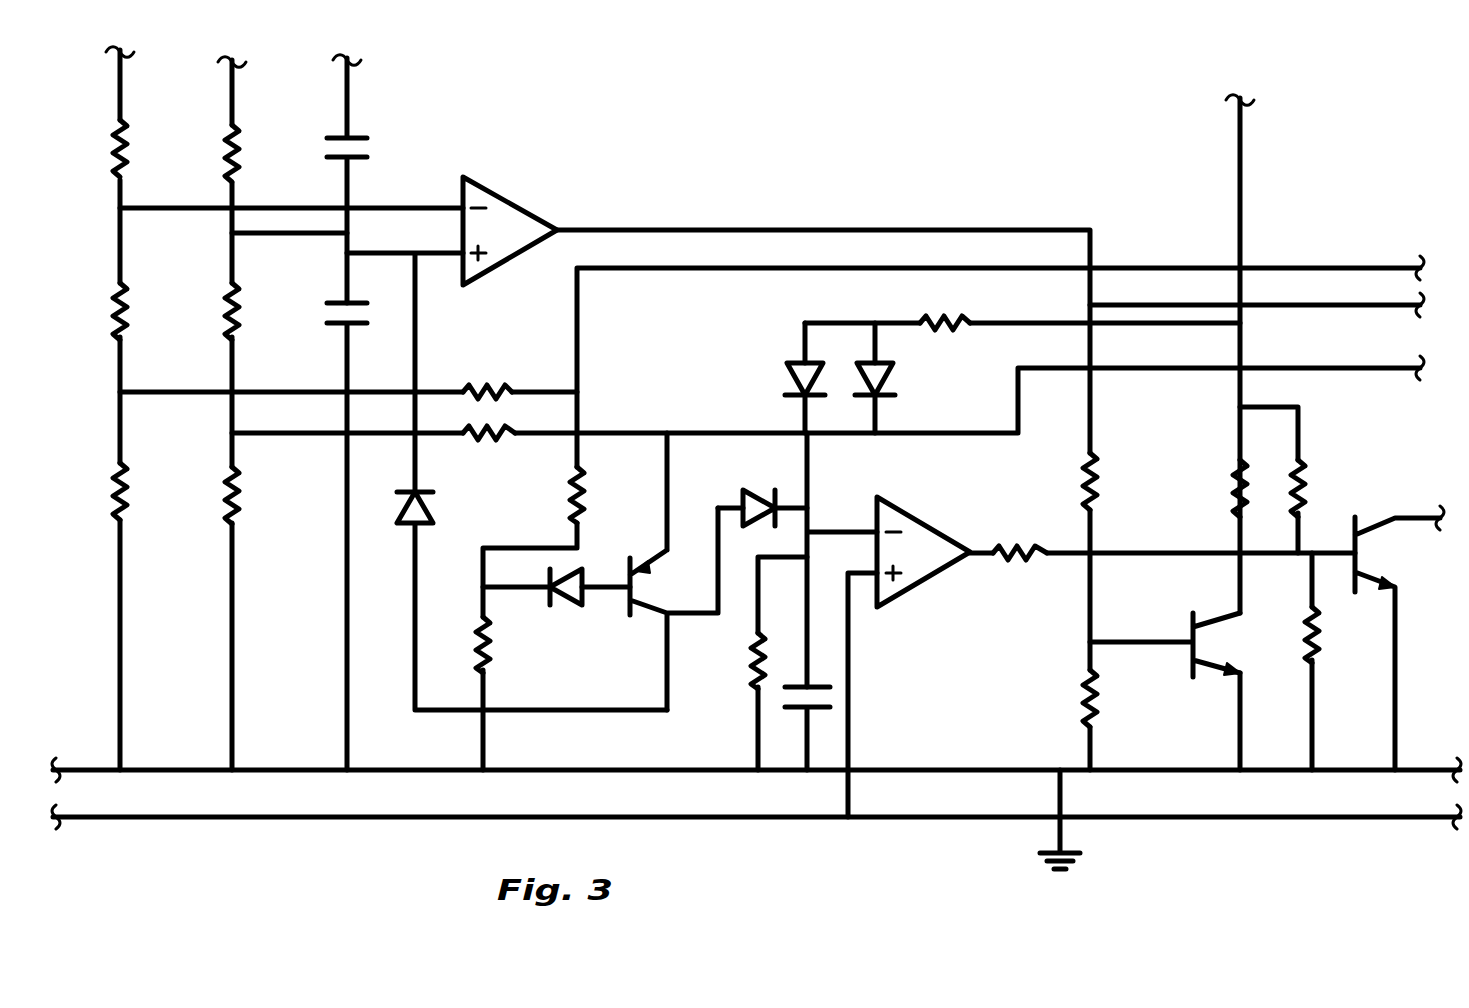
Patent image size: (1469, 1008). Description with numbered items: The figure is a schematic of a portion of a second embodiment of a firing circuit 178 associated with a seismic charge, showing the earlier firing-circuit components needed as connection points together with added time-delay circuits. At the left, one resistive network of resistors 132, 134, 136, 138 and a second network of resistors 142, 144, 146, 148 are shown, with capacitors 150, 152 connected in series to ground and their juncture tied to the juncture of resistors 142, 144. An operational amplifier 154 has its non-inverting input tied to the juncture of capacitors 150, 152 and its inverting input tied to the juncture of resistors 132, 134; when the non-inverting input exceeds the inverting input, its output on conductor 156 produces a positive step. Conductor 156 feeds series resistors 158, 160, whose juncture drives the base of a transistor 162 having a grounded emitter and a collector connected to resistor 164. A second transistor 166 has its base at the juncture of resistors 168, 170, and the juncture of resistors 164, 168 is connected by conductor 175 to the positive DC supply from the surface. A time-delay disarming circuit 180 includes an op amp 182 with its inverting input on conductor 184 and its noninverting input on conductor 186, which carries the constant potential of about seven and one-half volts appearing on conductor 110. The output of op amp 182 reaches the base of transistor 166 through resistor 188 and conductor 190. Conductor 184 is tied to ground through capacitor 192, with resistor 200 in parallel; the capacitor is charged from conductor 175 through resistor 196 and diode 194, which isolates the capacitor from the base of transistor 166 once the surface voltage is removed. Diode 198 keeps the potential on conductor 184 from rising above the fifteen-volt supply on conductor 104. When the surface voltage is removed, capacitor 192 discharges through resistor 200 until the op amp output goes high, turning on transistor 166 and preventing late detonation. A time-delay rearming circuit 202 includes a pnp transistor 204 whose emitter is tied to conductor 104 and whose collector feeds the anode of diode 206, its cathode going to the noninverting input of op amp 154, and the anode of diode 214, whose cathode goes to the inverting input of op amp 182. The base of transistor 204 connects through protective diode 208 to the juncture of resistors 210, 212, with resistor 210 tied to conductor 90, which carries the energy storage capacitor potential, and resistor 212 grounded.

The conductor 90 is at (652, 272).
The conductor 104 is at (968, 430).
The conductor 110 is at (890, 820).
The resistor 132 is at (128, 148).
The resistor 134 is at (128, 318).
The resistor 136 is at (128, 492).
The resistor 138 is at (477, 385).
The resistor 142 is at (240, 162).
The resistor 144 is at (240, 330).
The resistor 146 is at (240, 522).
The resistor 148 is at (486, 442).
The capacitor 150 is at (355, 136).
The capacitor 152 is at (322, 325).
The operational amplifier 154 is at (520, 216).
The conductor 156 is at (722, 230).
The resistor 158 is at (1085, 496).
The resistor 160 is at (1085, 716).
The transistor 162 is at (1188, 622).
The resistor 164 is at (1235, 500).
The second transistor 166 is at (1345, 520).
The resistor 168 is at (1302, 480).
The resistor 170 is at (1320, 625).
The conductor 175 is at (1242, 160).
The firing circuit 178 is at (666, 160).
The time-delay disarming circuit 180 is at (908, 616).
The operational amplifier 182 is at (920, 526).
The conductor 184 is at (835, 530).
The conductor 186 is at (852, 725).
The resistor 188 is at (1022, 556).
The conductor 190 is at (1140, 550).
The capacitor 192 is at (822, 688).
The diode 194 is at (800, 364).
The resistor 196 is at (955, 318).
The diode 198 is at (884, 374).
The resistor 200 is at (755, 657).
The time-delay rearming circuit 202 is at (664, 410).
The pnp transistor 204 is at (636, 568).
The diode 206 is at (432, 518).
The diode 208 is at (582, 600).
The resistor 210 is at (578, 498).
The resistor 212 is at (487, 645).
The diode 214 is at (755, 490).